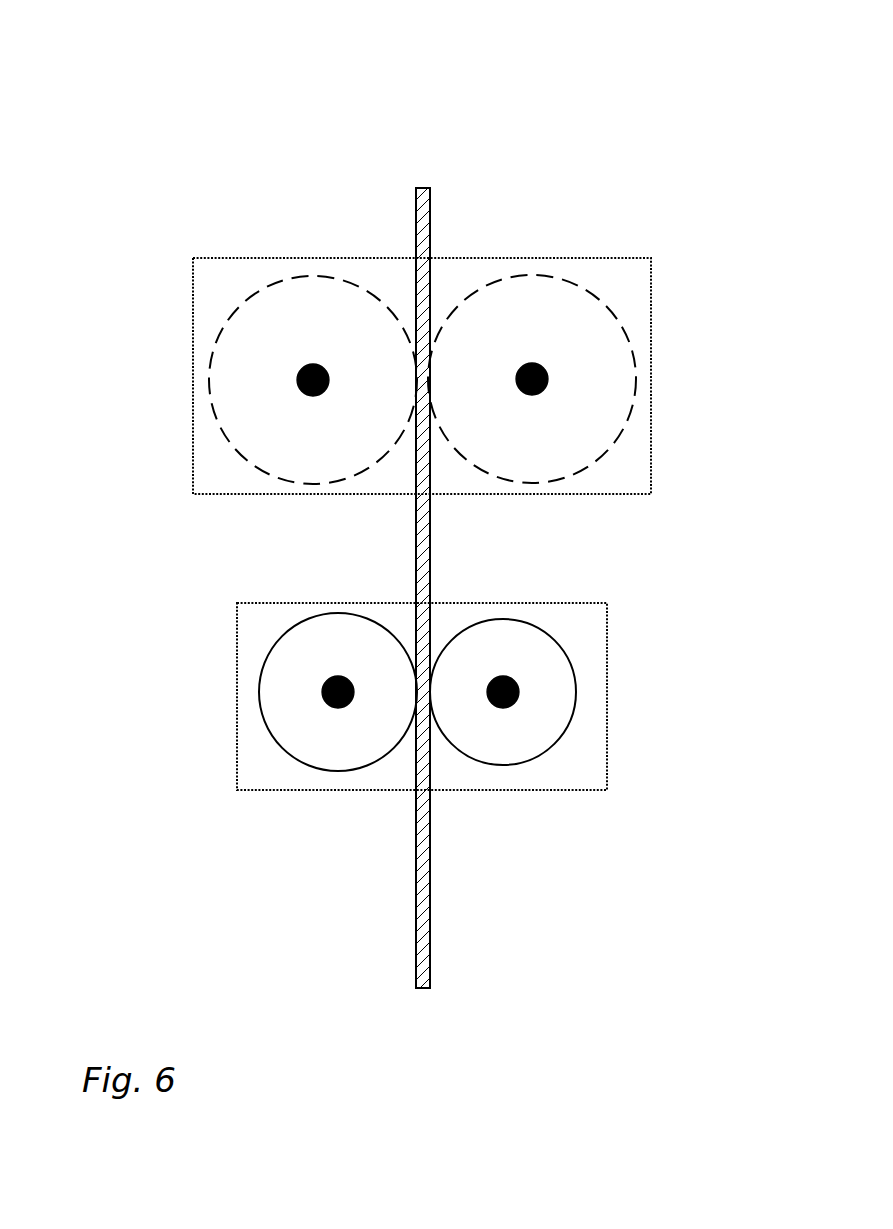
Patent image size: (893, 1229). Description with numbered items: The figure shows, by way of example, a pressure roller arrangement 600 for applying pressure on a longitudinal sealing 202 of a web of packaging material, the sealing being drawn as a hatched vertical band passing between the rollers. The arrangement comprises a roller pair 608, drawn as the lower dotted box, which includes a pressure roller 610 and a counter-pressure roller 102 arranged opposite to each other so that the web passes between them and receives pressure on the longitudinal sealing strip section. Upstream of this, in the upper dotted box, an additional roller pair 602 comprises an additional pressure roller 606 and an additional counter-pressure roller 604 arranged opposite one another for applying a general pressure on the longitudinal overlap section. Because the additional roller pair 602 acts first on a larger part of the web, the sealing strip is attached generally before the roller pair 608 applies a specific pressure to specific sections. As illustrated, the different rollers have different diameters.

The pressure roller arrangement 600 is at (62, 144).
The longitudinal sealing 202 is at (429, 928).
The additional roller pair 602 is at (651, 442).
The additional counter-pressure roller 604 is at (598, 299).
The additional pressure roller 606 is at (250, 455).
The roller pair 608 is at (607, 761).
The counter-pressure roller 102 is at (540, 630).
The pressure roller 610 is at (268, 731).